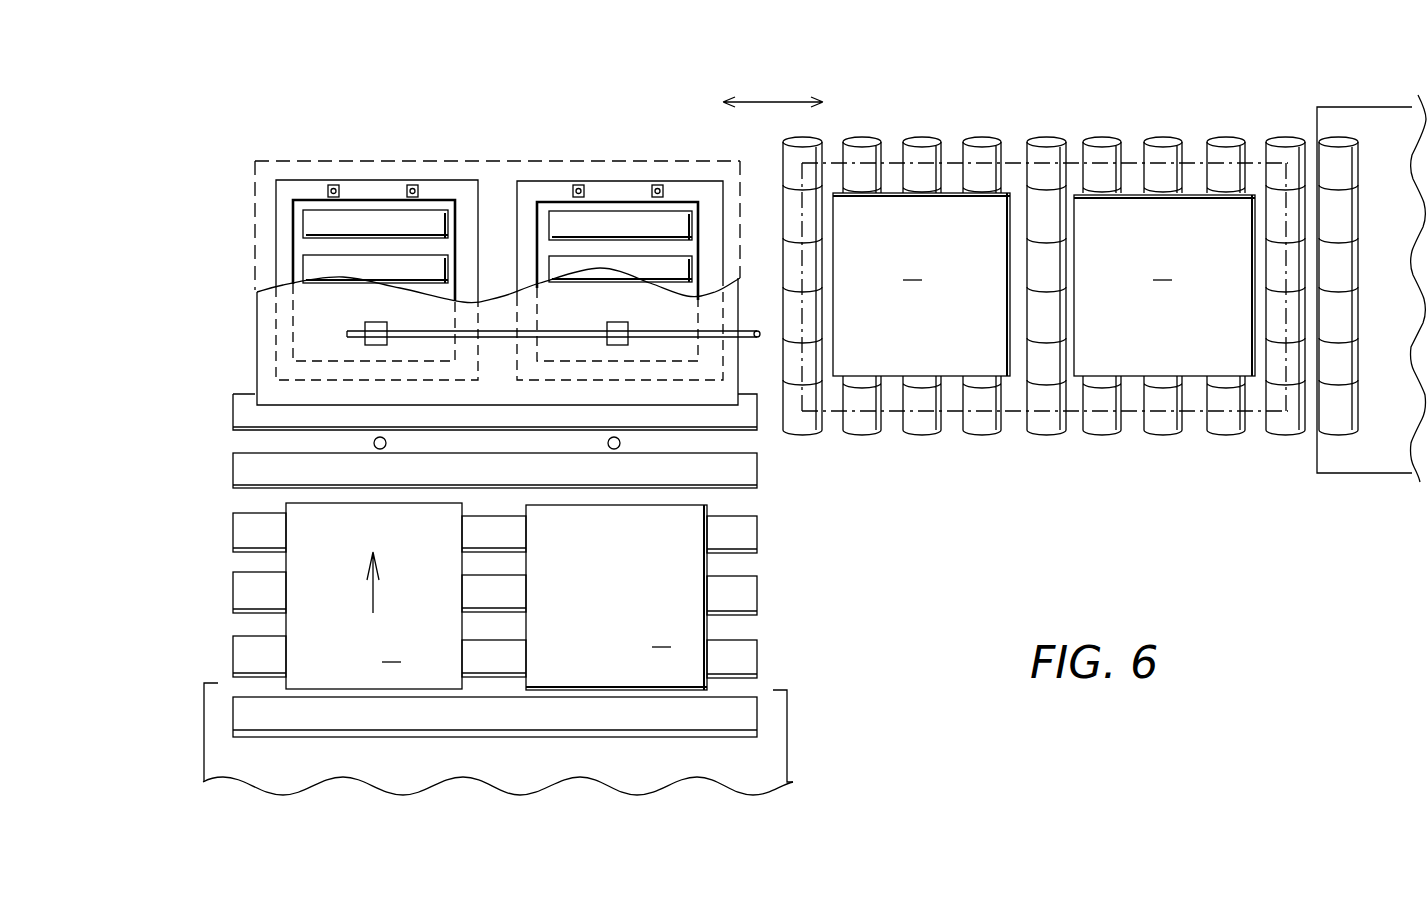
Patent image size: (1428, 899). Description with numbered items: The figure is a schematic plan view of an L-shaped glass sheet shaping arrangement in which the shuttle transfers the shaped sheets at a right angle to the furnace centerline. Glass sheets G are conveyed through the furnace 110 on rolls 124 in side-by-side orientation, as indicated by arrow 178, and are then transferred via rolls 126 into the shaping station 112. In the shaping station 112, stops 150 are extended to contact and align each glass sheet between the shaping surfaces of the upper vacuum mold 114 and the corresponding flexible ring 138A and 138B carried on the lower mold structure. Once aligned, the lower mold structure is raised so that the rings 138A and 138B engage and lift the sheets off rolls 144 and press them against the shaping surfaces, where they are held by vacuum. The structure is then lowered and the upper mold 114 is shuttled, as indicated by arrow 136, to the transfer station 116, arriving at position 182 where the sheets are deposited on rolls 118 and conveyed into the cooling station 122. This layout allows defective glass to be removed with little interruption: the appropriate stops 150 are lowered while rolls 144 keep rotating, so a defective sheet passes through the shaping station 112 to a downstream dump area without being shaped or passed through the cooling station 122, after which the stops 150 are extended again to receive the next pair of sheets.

The furnace 110 is at (533, 776).
The shaping station 112 is at (427, 108).
The upper vacuum mold 114 is at (257, 330).
The transfer station 116 is at (1048, 97).
The rolls 118 is at (1160, 434).
The cooling station 122 is at (1374, 93).
The rolls 124 is at (758, 717).
The rolls 126 is at (758, 657).
The arrow 136 is at (772, 102).
The flexible ring 138A is at (275, 211).
The flexible ring 138B is at (528, 180).
The rolls 144 is at (303, 262).
The stops 150 is at (413, 186).
The arrow 178 is at (373, 592).
The position 182 is at (1070, 163).